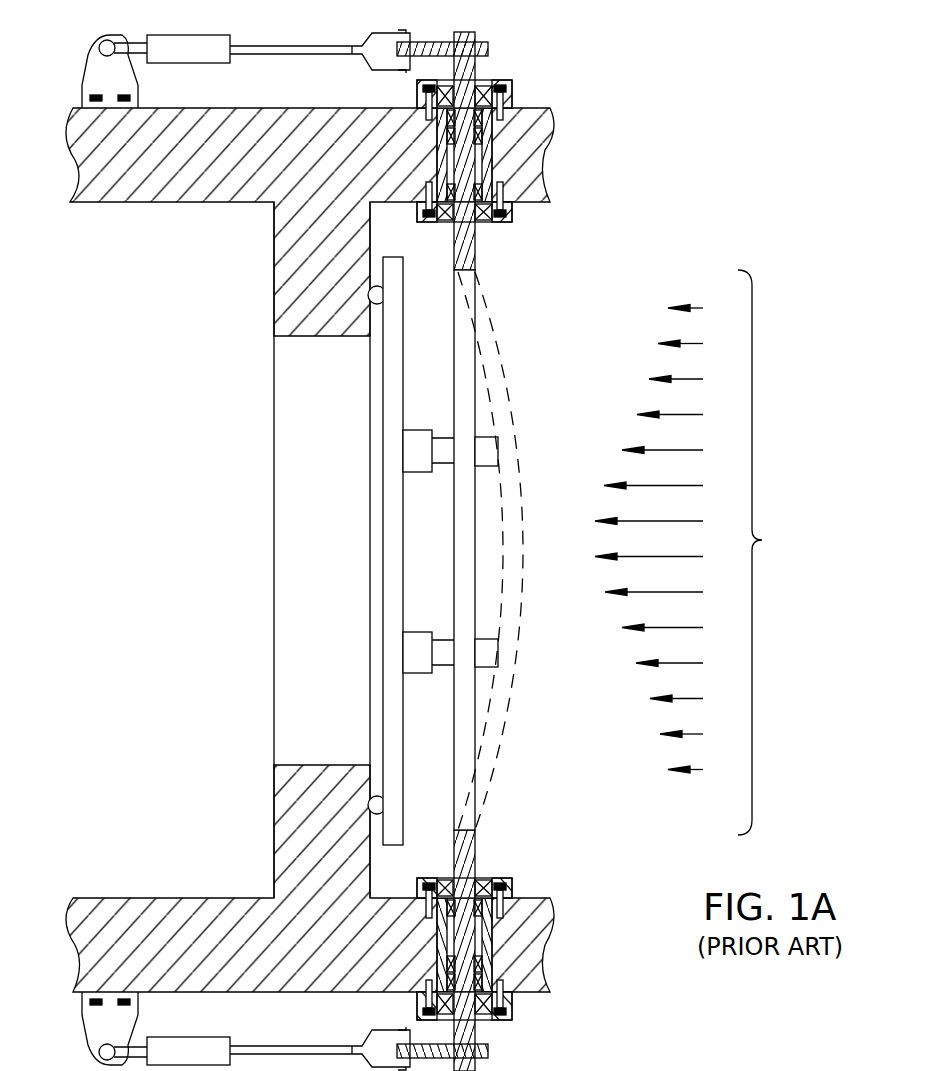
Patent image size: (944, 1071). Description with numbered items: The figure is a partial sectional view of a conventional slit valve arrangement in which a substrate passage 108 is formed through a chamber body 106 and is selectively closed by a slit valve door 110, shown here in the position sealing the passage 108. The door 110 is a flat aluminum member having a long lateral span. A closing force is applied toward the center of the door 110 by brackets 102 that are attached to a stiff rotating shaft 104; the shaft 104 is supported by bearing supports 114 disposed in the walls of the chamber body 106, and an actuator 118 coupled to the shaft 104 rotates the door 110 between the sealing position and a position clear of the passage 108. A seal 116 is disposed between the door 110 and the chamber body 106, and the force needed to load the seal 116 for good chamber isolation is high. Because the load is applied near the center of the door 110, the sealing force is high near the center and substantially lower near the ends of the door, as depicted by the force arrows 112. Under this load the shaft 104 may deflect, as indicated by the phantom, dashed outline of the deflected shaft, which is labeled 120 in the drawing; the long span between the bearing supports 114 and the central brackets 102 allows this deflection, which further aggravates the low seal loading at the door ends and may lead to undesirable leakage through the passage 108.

The brackets 102 is at (491, 428).
The rotating shaft 104 is at (462, 328).
The chamber body 106 is at (268, 136).
The substrate passage 108 is at (293, 487).
The slit valve door 110 is at (395, 277).
The force arrows 112 is at (706, 552).
The bearing supports 114 is at (500, 80).
The seal 116 is at (374, 292).
The actuator 118 is at (190, 47).
The deflected position of plate (dashed) 120 is at (503, 745).